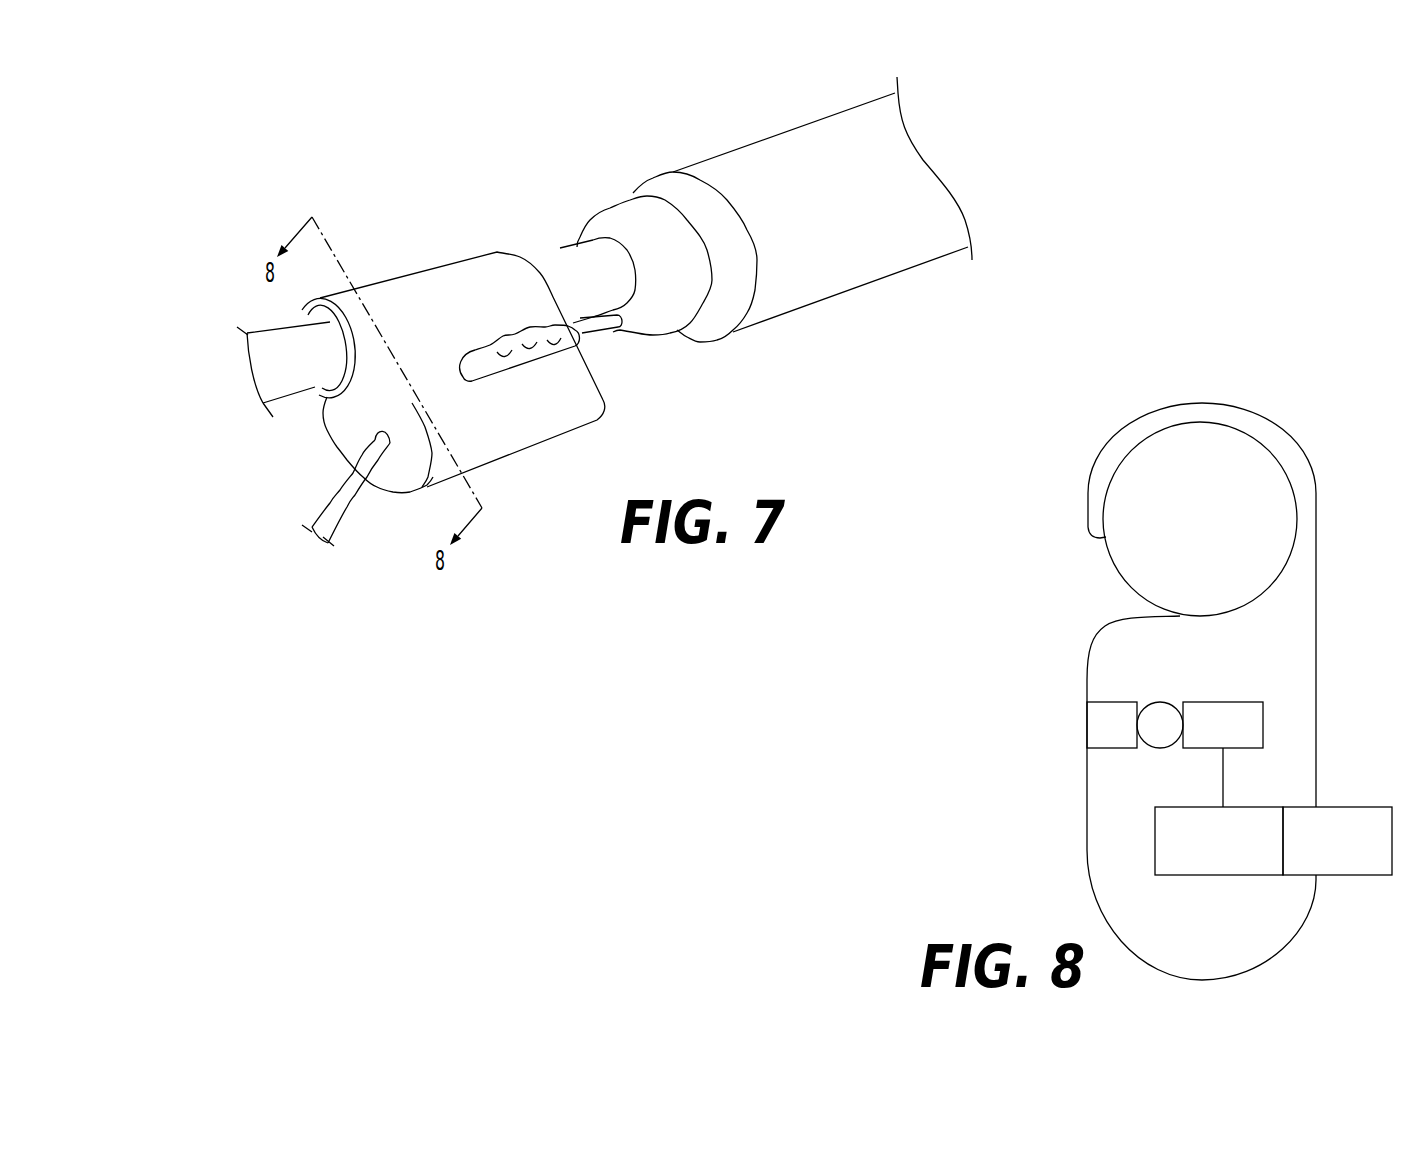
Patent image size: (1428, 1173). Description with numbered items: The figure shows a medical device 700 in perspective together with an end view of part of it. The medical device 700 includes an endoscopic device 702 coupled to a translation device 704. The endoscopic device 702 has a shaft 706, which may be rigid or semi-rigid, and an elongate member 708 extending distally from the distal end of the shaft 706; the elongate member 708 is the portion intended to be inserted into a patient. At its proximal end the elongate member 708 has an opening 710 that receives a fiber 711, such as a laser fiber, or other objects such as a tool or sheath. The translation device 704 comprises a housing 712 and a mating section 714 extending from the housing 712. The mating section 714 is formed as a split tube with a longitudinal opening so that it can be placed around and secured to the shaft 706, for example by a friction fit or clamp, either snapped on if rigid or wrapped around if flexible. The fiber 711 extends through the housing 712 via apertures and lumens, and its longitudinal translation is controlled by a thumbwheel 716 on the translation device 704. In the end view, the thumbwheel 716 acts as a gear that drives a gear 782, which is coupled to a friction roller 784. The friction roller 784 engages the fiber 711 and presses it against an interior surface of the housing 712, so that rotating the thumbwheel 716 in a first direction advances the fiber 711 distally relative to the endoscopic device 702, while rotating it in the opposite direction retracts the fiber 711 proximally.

In FIG. 7, the medical device 700 is at (282, 185).
In FIG. 7, the endoscopic device 702 is at (638, 167).
In FIG. 7, the translation device 704 is at (503, 458).
In FIG. 7, the shaft 706 is at (268, 327).
In FIG. 8, the shaft 706 is at (1239, 534).
In FIG. 7, the elongate member 708 is at (813, 120).
In FIG. 7, the opening 710 is at (608, 337).
In FIG. 7, the fiber 711 is at (347, 503).
In FIG. 8, the fiber 711 is at (1163, 700).
In FIG. 7, the housing 712 is at (327, 438).
In FIG. 7, the mating section 714 is at (298, 304).
In FIG. 8, the mating section 714 is at (1213, 403).
In FIG. 7, the thumbwheel 716 is at (548, 353).
In FIG. 8, the thumbwheel 716 is at (1357, 807).
In FIG. 8, the gear 782 is at (1237, 854).
In FIG. 8, the friction roller 784 is at (1240, 739).